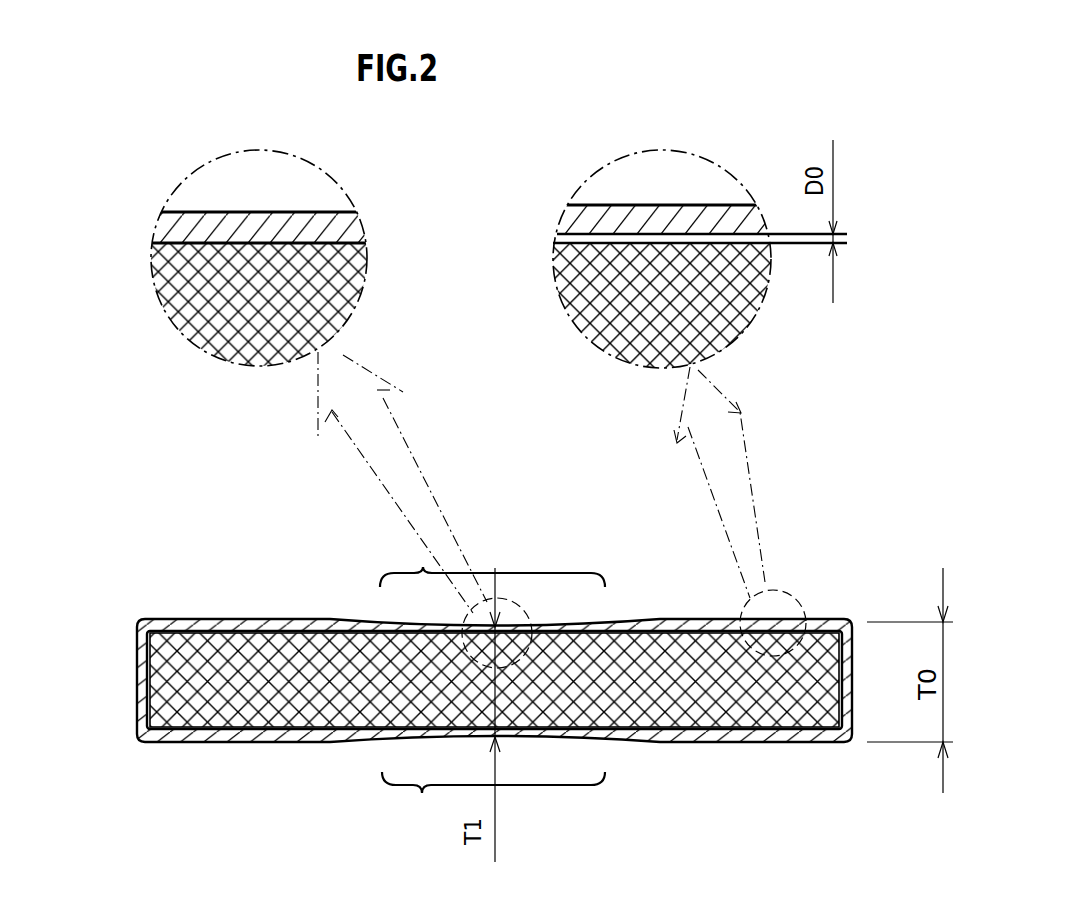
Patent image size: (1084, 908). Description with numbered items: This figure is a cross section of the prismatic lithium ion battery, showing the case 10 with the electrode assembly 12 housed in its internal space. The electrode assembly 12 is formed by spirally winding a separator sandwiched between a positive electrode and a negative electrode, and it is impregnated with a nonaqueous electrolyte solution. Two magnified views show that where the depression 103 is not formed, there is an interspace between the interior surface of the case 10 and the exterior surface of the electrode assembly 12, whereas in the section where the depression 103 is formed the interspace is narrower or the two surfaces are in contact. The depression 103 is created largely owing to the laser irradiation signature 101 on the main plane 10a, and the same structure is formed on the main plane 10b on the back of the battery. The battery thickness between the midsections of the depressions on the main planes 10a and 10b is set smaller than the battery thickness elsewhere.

The case 10 is at (165, 222).
The electrode assembly 12 is at (173, 292).
The main plane 10a is at (232, 607).
The main plane 10b is at (232, 753).
The laser irradiation signature 101 is at (507, 627).
The depression 103 is at (423, 568).